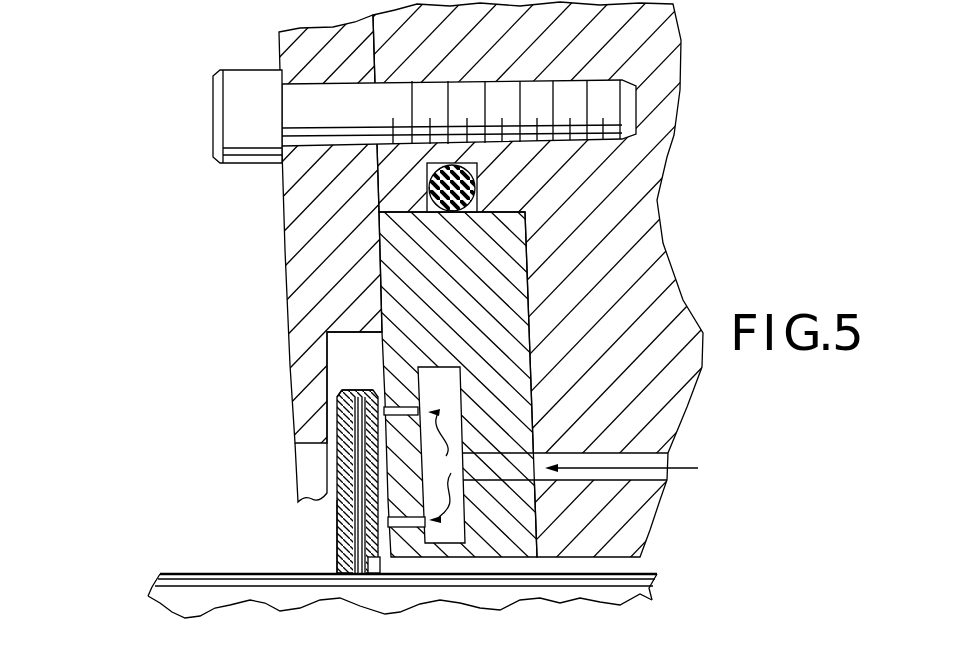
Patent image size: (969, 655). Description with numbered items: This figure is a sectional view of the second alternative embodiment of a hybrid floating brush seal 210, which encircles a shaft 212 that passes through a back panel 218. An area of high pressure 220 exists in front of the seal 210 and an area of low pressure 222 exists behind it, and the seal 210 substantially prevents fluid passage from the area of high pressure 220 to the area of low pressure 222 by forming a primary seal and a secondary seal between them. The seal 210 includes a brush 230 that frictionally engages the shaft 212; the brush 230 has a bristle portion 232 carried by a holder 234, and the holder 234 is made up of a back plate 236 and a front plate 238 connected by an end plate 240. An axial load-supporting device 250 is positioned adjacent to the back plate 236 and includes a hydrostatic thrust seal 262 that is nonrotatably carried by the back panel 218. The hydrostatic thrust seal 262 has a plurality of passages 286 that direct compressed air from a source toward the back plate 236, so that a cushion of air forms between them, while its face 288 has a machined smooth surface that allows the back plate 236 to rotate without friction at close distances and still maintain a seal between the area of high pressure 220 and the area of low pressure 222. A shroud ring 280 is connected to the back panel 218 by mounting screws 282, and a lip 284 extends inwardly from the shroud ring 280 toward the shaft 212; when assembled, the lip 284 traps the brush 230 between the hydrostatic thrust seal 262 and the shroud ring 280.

The hybrid floating brush seal 210 is at (216, 492).
The shaft 212 is at (153, 597).
The back panel 218 is at (657, 157).
The area of high pressure 220 is at (116, 393).
The area of low pressure 222 is at (630, 568).
The brush 230 is at (326, 465).
The bristle portion 232 is at (345, 533).
The holder 234 is at (344, 380).
The back plate 236 is at (375, 573).
The front plate 238 is at (333, 413).
The end plate 240 is at (362, 388).
The axial load-supporting device 250 is at (507, 291).
The hydrostatic thrust seal 262 is at (456, 532).
The shroud ring 280 is at (272, 185).
The mounting screws 282 is at (230, 93).
The lip 284 is at (298, 396).
The passages 286 is at (404, 522).
The face 288 is at (365, 342).